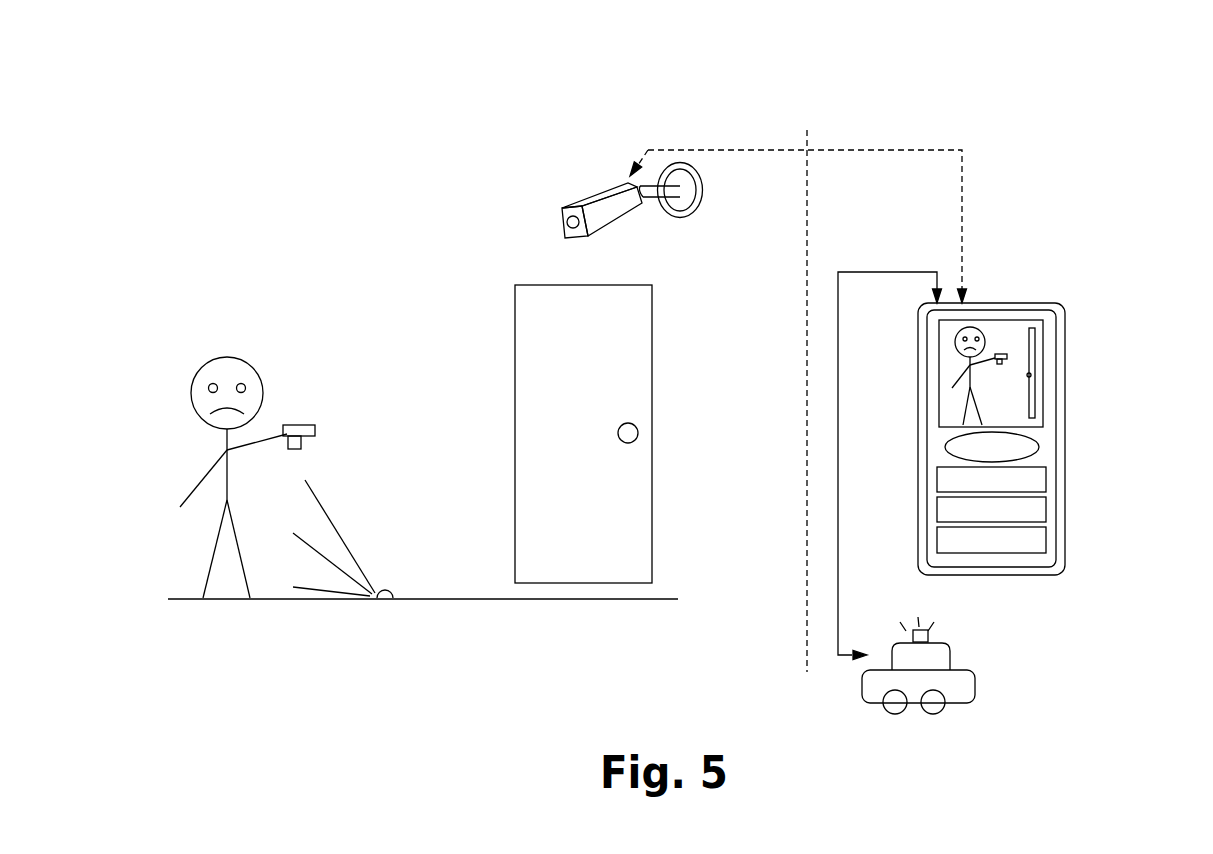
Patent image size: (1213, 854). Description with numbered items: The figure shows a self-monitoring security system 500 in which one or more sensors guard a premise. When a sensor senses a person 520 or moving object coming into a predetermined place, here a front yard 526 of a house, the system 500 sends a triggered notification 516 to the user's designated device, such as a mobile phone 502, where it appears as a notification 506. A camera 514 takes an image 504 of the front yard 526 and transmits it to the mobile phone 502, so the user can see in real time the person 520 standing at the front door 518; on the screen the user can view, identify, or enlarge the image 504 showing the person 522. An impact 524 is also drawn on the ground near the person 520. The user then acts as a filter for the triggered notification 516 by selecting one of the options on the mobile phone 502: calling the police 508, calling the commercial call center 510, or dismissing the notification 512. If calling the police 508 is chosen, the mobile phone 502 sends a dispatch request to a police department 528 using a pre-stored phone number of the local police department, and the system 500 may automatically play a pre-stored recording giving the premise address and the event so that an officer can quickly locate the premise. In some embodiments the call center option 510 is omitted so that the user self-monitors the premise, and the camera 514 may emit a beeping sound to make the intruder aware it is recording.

The self-monitoring security system 500 is at (1200, 65).
The mobile phone 502 is at (1052, 411).
The image of the front yard 504 is at (1051, 370).
The notification 506 is at (1056, 442).
The calling the police option 508 is at (1061, 474).
The calling the commercial call center option 510 is at (1061, 503).
The dismissing the notification option 512 is at (1061, 533).
The camera 514 is at (548, 196).
The triggered notification 516 is at (724, 138).
The front door 518 is at (601, 353).
The person 520 is at (278, 338).
The person on the screen 522 is at (1029, 340).
The gunshot impact 524 is at (408, 583).
The front yard 526 is at (391, 390).
The police department 528 is at (996, 668).